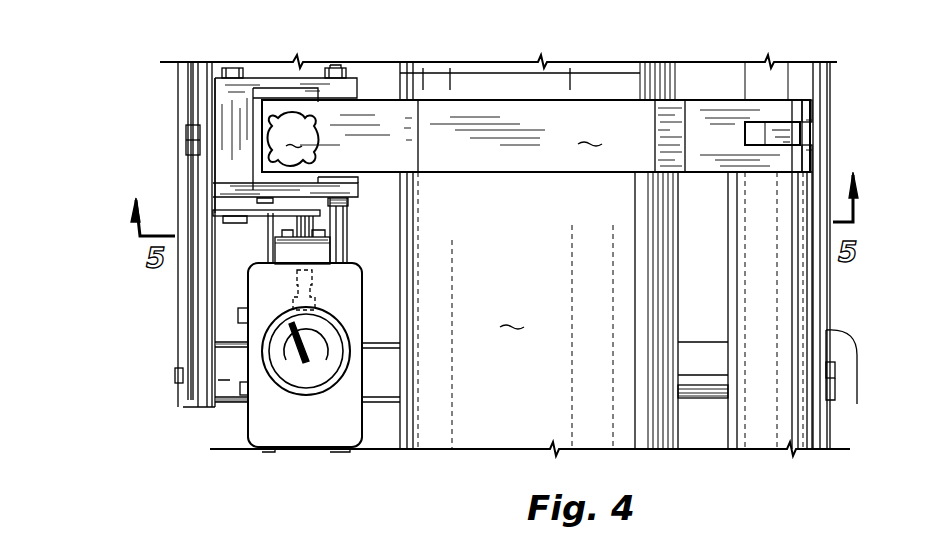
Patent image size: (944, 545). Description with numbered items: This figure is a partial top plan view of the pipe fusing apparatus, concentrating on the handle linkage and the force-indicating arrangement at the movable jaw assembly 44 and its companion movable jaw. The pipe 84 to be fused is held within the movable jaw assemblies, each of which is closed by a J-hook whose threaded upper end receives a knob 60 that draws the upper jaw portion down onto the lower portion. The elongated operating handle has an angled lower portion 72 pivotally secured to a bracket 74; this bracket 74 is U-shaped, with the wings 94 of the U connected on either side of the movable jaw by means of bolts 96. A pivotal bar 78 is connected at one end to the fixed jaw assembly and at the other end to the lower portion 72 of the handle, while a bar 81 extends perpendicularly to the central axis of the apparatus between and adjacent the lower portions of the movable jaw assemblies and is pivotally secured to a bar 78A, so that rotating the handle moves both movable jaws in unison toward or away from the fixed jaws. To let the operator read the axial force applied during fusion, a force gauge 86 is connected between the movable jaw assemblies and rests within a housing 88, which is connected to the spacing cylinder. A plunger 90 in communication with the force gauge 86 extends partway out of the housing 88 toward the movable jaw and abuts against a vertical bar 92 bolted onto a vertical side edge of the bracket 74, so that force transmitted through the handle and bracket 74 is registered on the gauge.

The movable jaw assembly 44 is at (537, 136).
The knob 60 is at (293, 139).
The angled lower portion of handle 72 is at (214, 400).
The bracket 74 is at (230, 162).
The pivotal bar 78 is at (190, 342).
The bar 78A is at (851, 377).
The bar 81 is at (711, 386).
The pipe 84 is at (587, 310).
The force gauge 86 is at (318, 378).
The housing 88 is at (278, 438).
The plunger 90 is at (316, 222).
The vertical bar 92 is at (258, 214).
The wings 94 is at (347, 74).
The bolts 96 is at (337, 68).